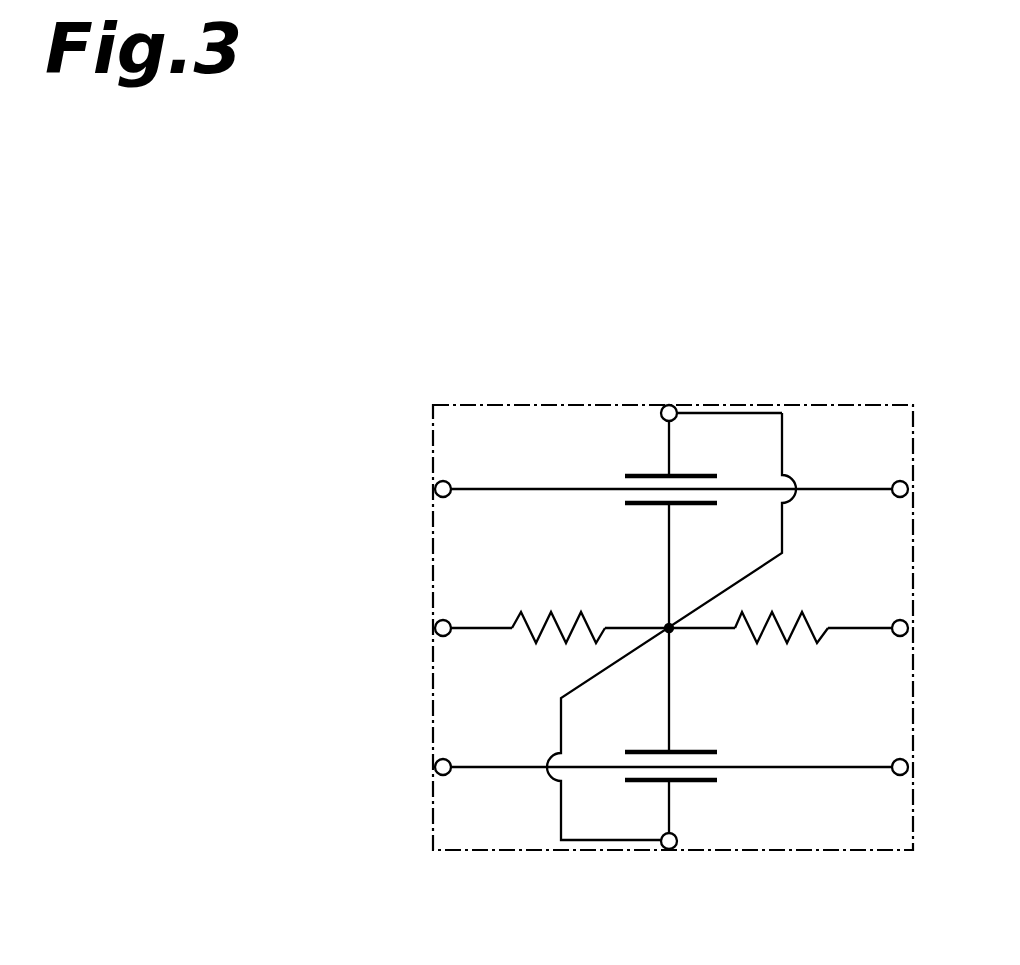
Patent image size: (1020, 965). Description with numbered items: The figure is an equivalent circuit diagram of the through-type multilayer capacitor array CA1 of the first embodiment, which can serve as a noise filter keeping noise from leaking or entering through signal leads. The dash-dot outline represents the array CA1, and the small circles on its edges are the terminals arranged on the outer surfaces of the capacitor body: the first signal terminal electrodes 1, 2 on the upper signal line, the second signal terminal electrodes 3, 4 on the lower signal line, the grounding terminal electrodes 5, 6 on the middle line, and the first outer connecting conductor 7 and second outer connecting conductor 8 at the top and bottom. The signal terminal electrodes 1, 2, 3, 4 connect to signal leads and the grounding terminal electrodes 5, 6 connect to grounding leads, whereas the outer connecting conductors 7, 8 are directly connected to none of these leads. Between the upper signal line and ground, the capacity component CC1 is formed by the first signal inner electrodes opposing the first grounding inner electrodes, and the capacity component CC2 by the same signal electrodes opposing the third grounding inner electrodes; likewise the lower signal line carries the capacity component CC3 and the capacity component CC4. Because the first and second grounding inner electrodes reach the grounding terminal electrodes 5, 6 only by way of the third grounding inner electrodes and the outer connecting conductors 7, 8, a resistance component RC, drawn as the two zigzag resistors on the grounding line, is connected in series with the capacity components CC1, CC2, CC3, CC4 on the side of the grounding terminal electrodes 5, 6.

The through-type multilayer capacitor array CA1 is at (829, 404).
The capacity component CC1 is at (612, 475).
The capacity component CC2 is at (612, 501).
The capacity component CC3 is at (731, 779).
The capacity component CC4 is at (731, 753).
The resistance component RC is at (750, 597).
The first signal terminal electrode 1 is at (422, 490).
The first signal terminal electrode 2 is at (921, 490).
The second signal terminal electrode 3 is at (421, 768).
The second signal terminal electrode 4 is at (920, 768).
The grounding terminal electrode 5 is at (422, 629).
The grounding terminal electrode 6 is at (921, 629).
The first outer connecting conductor 7 is at (668, 386).
The second outer connecting conductor 8 is at (668, 868).